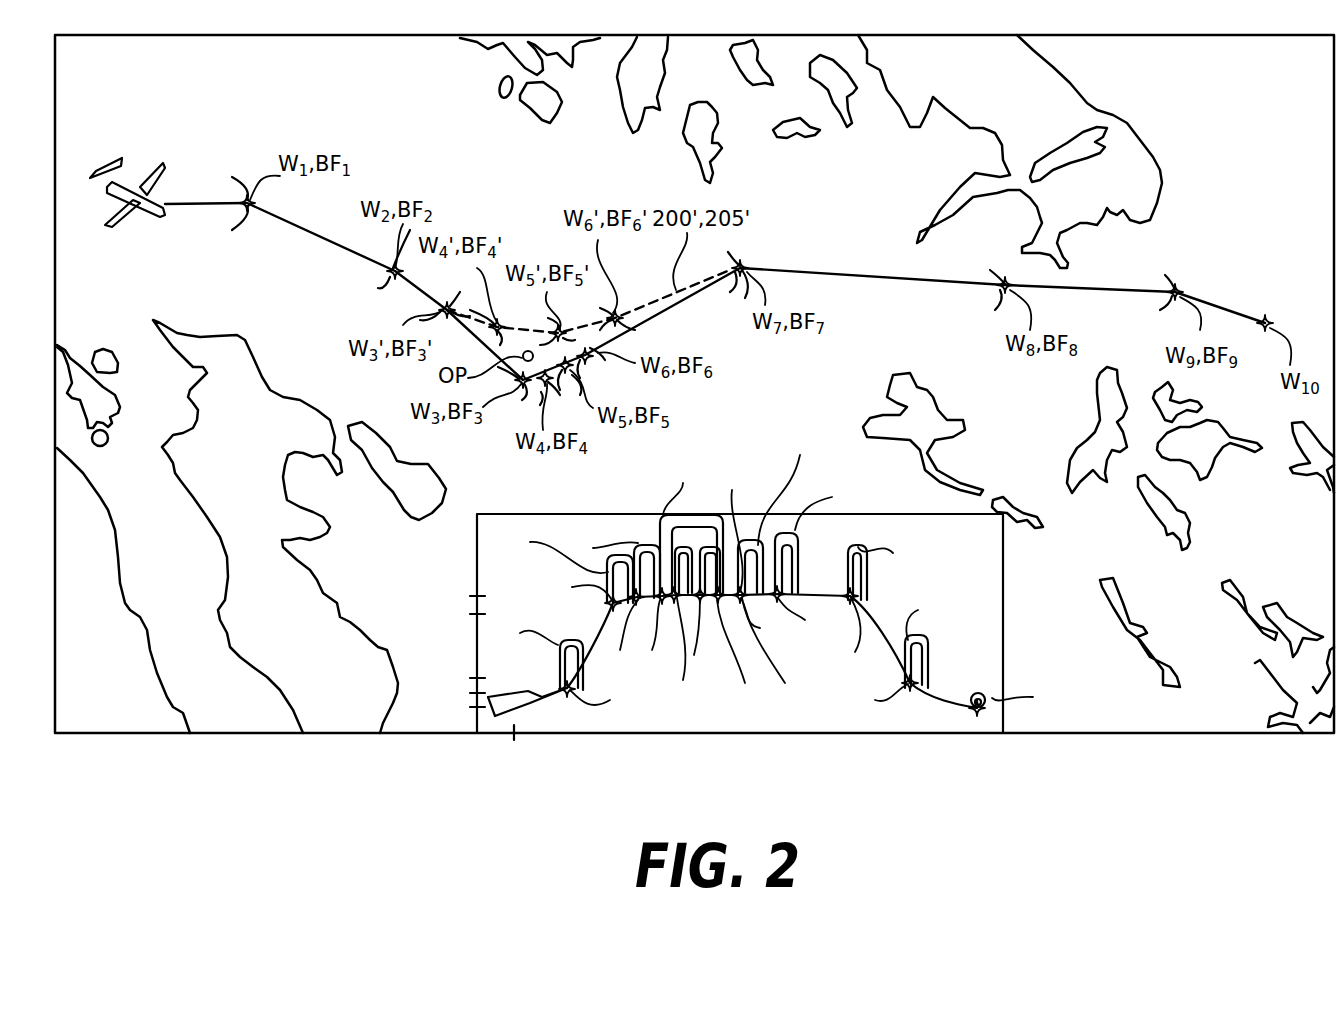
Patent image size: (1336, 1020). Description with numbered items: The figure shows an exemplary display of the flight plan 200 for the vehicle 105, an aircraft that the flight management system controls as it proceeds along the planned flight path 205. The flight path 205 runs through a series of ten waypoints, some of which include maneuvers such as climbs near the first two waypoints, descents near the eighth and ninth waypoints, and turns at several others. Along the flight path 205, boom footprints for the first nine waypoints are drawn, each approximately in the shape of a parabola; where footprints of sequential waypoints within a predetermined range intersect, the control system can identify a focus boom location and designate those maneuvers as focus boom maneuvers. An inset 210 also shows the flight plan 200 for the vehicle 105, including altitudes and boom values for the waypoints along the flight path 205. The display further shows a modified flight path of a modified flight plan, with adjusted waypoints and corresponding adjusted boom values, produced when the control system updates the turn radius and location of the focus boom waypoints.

The vehicle 105 is at (103, 160).
The flight plan 200 is at (1243, 176).
The flight path 205 is at (852, 270).
The inset 210 is at (1003, 592).